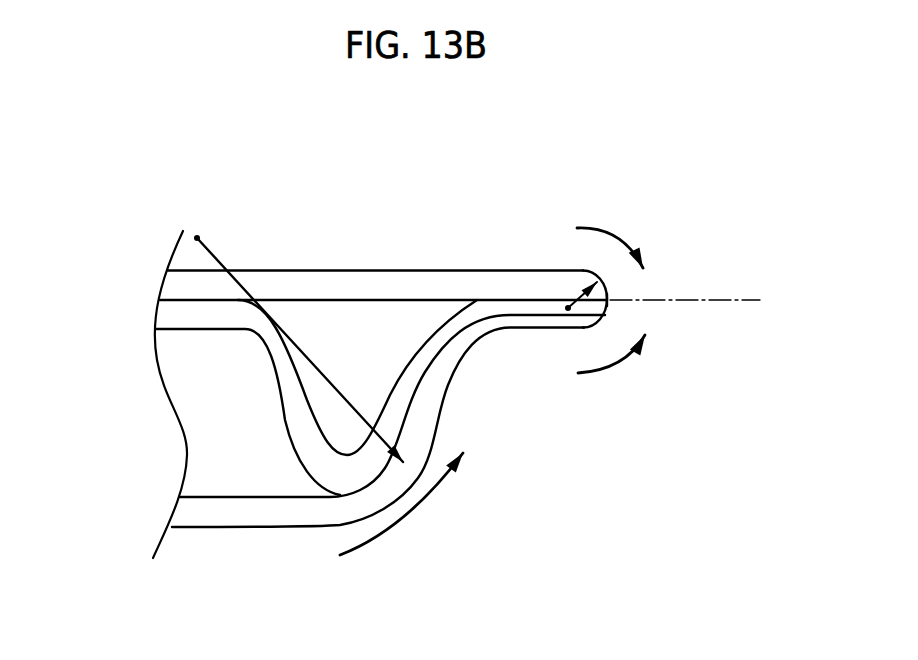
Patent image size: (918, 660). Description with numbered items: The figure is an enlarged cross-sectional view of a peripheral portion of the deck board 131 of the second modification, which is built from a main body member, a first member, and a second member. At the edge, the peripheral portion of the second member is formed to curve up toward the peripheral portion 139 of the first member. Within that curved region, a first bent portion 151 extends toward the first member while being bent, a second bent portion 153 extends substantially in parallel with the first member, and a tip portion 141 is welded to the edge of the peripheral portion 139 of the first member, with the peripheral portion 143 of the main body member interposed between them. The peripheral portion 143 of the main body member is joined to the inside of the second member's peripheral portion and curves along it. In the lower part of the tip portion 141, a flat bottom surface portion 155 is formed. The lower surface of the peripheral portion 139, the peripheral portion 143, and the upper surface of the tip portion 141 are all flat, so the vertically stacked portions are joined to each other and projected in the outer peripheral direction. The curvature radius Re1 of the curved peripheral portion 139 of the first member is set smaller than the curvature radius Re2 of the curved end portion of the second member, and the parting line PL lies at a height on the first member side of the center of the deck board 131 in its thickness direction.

The deck board 131 is at (456, 386).
The peripheral portion of the first member 139 is at (582, 281).
The tip portion of the second member 141 is at (572, 322).
The peripheral portion of the main body member 143 is at (603, 308).
The first bent portion 151 is at (380, 468).
The second bent portion 153 is at (455, 348).
The bottom surface portion 155 is at (522, 332).
The curvature radius of the peripheral portion of the first member Re1 is at (570, 296).
The curvature radius of the end portion of the second member Re2 is at (243, 290).
The parting line PL is at (685, 287).